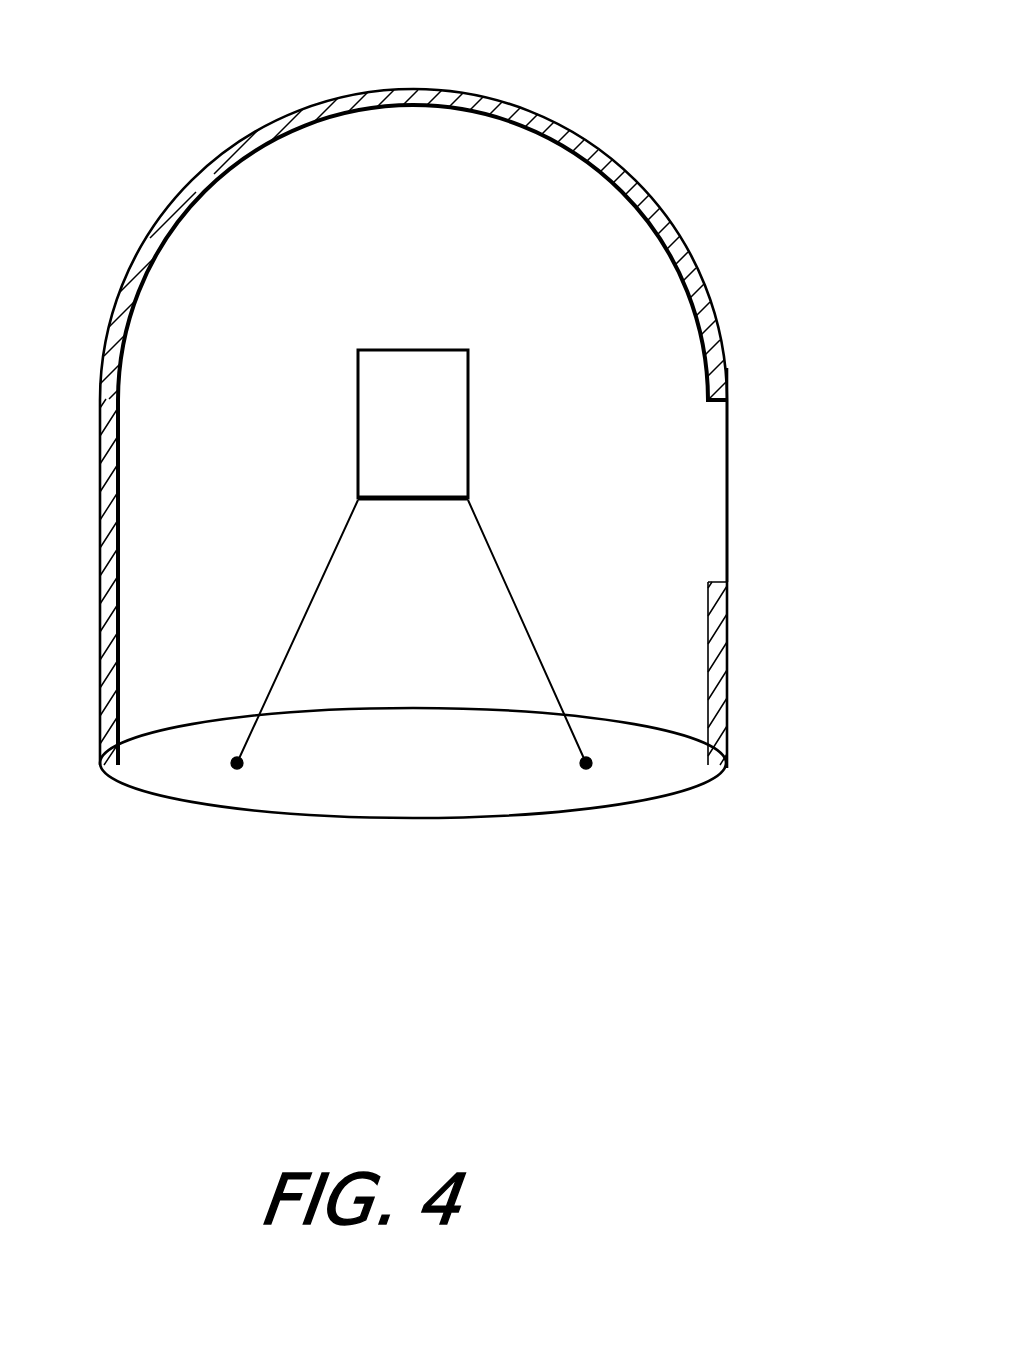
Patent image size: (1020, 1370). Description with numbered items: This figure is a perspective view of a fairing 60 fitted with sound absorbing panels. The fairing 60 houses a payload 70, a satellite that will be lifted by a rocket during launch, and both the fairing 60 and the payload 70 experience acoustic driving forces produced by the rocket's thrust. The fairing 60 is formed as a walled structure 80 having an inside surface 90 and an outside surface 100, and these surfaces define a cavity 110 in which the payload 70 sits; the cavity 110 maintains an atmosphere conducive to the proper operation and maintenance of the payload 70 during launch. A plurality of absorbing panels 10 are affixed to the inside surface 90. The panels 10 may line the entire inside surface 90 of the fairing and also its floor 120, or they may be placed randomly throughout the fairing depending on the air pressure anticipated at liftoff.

The fairing 60 is at (760, 76).
The absorbing panels 10 is at (533, 118).
The payload 70 is at (420, 362).
The walled structure 80 is at (729, 370).
The inside surface 90 is at (725, 480).
The outside surface 100 is at (734, 530).
The cavity 110 is at (285, 408).
The floor 120 is at (455, 815).